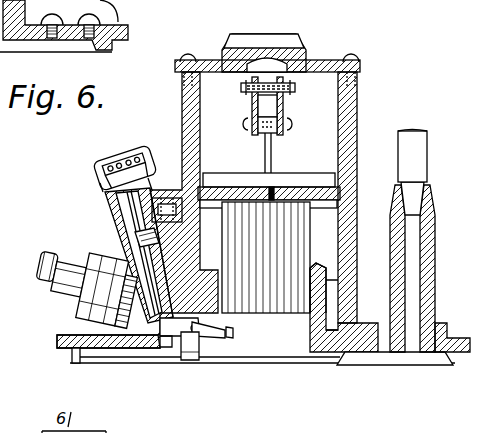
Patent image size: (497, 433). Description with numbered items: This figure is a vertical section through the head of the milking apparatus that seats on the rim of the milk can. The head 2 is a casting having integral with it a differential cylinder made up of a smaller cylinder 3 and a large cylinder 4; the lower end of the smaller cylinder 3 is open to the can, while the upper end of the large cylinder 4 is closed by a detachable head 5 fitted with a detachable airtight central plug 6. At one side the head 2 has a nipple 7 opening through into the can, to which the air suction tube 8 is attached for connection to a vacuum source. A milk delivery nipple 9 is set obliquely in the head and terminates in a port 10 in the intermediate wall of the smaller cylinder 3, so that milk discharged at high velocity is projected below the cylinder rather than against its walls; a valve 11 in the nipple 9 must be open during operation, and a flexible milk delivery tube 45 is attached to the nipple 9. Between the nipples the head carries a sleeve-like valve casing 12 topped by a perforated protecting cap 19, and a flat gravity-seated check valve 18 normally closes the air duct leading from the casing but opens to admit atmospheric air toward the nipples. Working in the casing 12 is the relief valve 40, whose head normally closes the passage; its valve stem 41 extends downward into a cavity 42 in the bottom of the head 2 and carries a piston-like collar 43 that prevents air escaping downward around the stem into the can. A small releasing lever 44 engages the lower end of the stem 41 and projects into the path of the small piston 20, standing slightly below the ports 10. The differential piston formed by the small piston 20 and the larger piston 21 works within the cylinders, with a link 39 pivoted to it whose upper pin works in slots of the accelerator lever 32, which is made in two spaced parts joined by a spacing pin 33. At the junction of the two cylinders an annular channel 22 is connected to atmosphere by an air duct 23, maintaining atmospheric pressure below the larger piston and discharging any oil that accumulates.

The head 2 is at (136, 350).
The smaller cylinder 3 is at (310, 318).
The large cylinder 4 is at (353, 117).
The detachable head 5 is at (316, 61).
The central plug 6 is at (280, 44).
The nipple 7 is at (430, 302).
The air suction tube 8 is at (415, 157).
The milk delivery nipple 9 is at (68, 292).
The port 10 is at (233, 333).
The valve 11 is at (102, 258).
The valve casing 12 is at (113, 208).
The check valve 18 is at (170, 198).
The protecting cap 19 is at (122, 157).
The small piston 20 is at (266, 257).
The larger piston 21 is at (242, 164).
The annular channel 22 is at (327, 276).
The air duct 23 is at (334, 309).
The accelerator lever 32 is at (252, 105).
The spacing pin 33 is at (288, 88).
The link 39 is at (272, 153).
The relief valve 40 is at (102, 193).
The valve stem 41 is at (77, 362).
The cavity 42 is at (166, 337).
The piston-like collar 43 is at (134, 236).
The releasing lever 44 is at (211, 343).
The milk delivery tube 45 is at (190, 352).